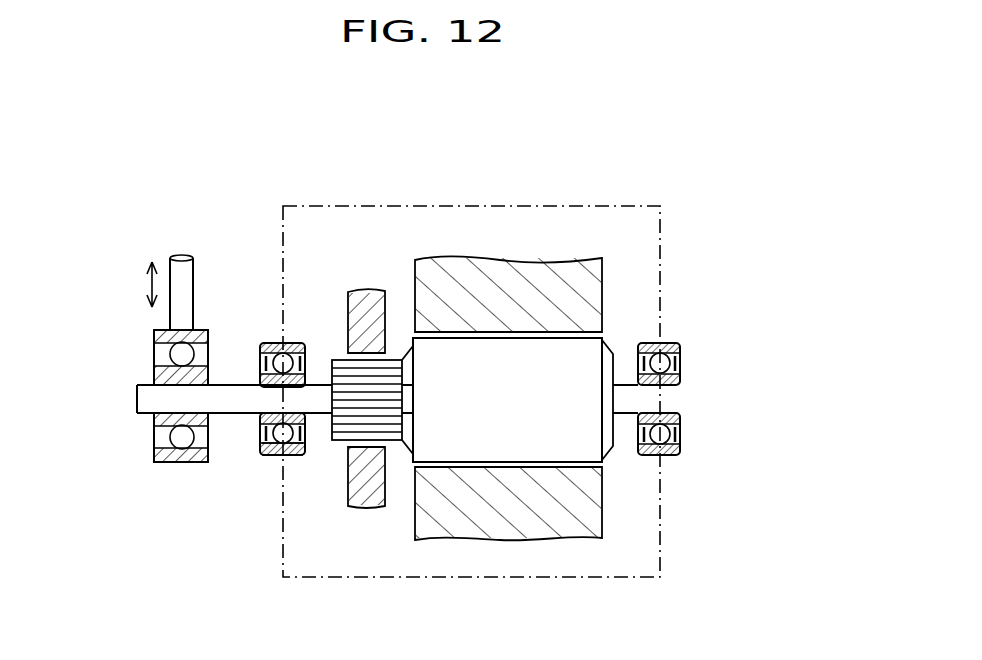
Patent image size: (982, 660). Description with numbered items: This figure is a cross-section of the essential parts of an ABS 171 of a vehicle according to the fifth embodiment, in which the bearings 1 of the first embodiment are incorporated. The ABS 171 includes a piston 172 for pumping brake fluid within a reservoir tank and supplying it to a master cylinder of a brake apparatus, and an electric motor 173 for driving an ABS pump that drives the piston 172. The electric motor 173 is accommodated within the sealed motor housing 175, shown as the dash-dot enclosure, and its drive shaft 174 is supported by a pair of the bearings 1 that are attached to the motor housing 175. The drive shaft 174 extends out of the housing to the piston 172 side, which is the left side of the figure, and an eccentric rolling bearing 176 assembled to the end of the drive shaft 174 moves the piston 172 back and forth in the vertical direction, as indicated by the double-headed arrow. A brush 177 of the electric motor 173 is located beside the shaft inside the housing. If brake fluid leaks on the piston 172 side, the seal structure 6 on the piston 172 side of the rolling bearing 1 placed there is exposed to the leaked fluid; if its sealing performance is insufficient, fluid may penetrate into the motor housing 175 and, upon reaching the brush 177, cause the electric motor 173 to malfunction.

The bearing 1 is at (262, 329).
The seal 6 is at (267, 445).
The ABS 171 is at (647, 176).
The piston 172 is at (181, 261).
The electric motor 173 is at (558, 432).
The drive shaft 174 is at (233, 414).
The motor housing 175 is at (505, 206).
The eccentric rolling bearing 176 is at (147, 475).
The brush 177 is at (368, 318).